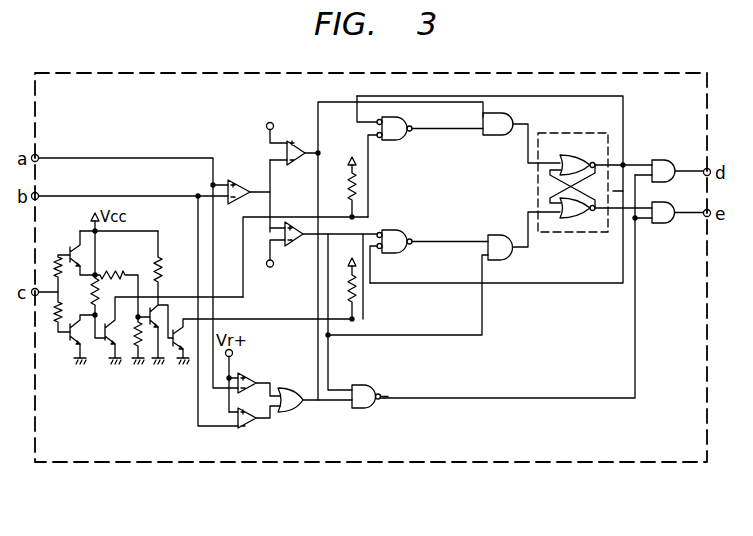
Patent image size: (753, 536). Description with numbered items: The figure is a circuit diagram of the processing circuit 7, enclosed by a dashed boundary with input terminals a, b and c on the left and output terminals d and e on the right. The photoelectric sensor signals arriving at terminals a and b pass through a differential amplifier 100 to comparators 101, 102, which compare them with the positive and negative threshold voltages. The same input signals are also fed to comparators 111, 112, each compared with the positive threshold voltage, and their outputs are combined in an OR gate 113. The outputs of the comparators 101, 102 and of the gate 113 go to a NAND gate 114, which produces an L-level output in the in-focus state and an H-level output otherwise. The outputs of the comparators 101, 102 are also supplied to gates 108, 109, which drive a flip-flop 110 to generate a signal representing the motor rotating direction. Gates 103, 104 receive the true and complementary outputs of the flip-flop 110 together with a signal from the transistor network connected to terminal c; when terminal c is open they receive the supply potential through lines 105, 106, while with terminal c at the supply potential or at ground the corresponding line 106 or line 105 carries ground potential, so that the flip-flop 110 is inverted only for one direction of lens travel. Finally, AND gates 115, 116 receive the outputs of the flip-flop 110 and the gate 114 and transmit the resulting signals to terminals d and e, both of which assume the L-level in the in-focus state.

The processing circuit 7 is at (335, 462).
The differential amplifier 100 is at (241, 172).
The comparator 101 is at (297, 138).
The comparator 102 is at (296, 249).
The gate 103 is at (412, 115).
The gate 104 is at (392, 229).
The line 105 is at (365, 184).
The line 106 is at (365, 304).
The gate 108 is at (500, 116).
The gate 109 is at (500, 229).
The flip-flop 110 is at (577, 133).
The comparator 111 is at (246, 375).
The comparator 112 is at (248, 430).
The OR gate 113 is at (293, 392).
The NAND gate 114 is at (360, 385).
The AND gate 115 is at (659, 158).
The AND gate 116 is at (659, 225).